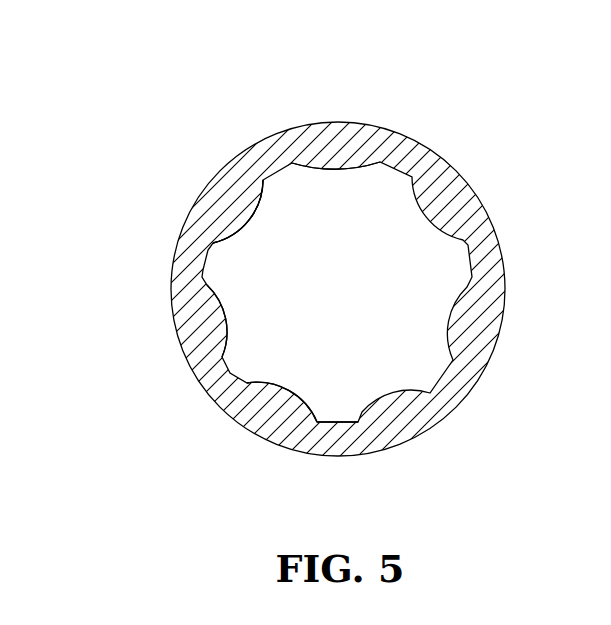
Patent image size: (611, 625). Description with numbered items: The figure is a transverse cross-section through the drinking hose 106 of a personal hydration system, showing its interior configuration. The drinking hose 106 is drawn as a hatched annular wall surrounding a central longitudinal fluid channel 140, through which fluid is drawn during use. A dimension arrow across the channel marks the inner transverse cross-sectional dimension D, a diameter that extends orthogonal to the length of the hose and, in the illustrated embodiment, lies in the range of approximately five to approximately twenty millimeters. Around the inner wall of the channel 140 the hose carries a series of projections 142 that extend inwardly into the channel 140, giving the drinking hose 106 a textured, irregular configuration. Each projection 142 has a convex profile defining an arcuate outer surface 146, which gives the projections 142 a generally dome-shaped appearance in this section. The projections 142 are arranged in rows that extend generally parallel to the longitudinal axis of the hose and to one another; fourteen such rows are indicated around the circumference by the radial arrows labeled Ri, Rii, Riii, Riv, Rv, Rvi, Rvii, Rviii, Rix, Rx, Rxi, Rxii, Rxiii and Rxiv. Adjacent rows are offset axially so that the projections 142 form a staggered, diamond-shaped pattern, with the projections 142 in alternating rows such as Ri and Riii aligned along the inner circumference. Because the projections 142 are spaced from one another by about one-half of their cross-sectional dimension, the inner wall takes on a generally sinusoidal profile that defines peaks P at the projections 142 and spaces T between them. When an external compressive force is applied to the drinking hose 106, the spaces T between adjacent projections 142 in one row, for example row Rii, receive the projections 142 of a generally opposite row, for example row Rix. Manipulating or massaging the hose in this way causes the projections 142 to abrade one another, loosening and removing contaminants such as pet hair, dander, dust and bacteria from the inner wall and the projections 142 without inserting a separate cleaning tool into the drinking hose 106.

The drinking hose 106 is at (395, 120).
The fluid channel 140 is at (402, 258).
The projections 142 is at (270, 212).
The arcuate outer surface 146 is at (247, 228).
The inner transverse cross-sectional dimension D is at (259, 291).
The peaks P is at (229, 318).
The spaces T is at (237, 385).
The row Ri is at (338, 105).
The row Rii is at (418, 123).
The row Riii is at (482, 174).
The row Riv is at (517, 248).
The row Rv is at (517, 330).
The row Rvi is at (482, 404).
The row Rvii is at (418, 455).
The row Rviii is at (338, 473).
The row Rix is at (258, 455).
The row Rx is at (194, 404).
The row Rxi is at (159, 330).
The row Rxii is at (159, 248).
The row Rxiii is at (194, 174).
The row Rxiv is at (258, 123).